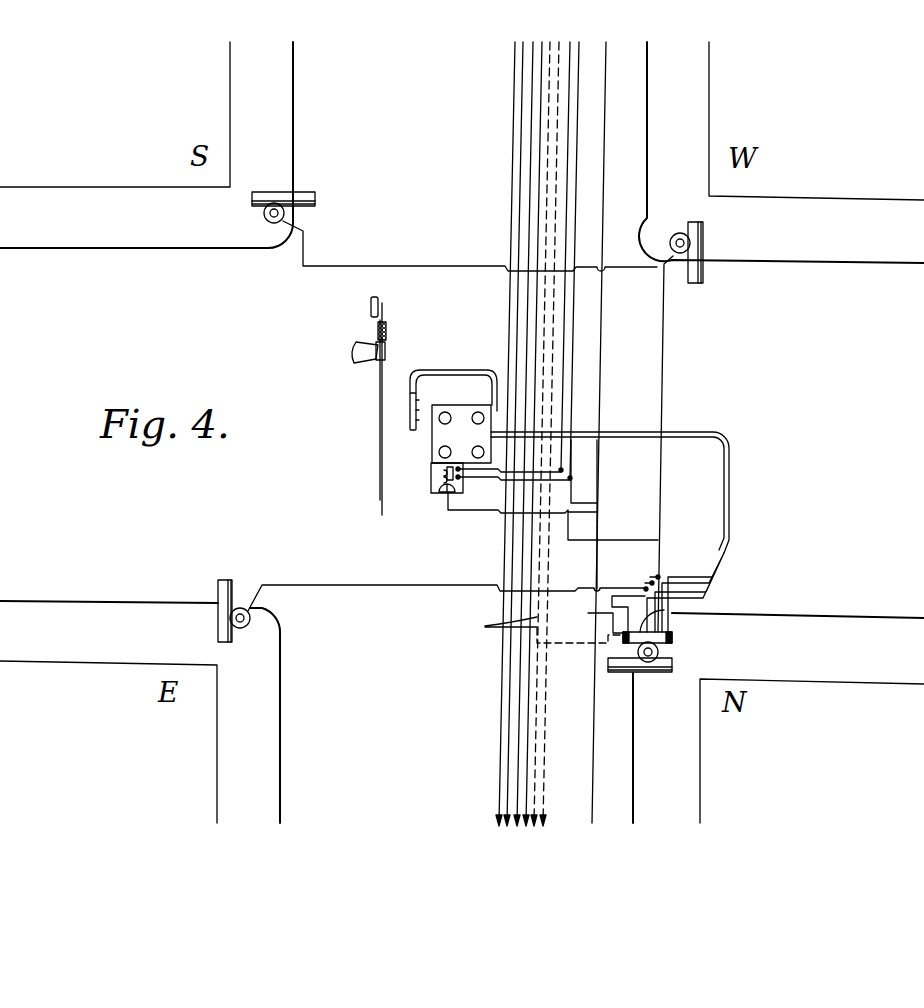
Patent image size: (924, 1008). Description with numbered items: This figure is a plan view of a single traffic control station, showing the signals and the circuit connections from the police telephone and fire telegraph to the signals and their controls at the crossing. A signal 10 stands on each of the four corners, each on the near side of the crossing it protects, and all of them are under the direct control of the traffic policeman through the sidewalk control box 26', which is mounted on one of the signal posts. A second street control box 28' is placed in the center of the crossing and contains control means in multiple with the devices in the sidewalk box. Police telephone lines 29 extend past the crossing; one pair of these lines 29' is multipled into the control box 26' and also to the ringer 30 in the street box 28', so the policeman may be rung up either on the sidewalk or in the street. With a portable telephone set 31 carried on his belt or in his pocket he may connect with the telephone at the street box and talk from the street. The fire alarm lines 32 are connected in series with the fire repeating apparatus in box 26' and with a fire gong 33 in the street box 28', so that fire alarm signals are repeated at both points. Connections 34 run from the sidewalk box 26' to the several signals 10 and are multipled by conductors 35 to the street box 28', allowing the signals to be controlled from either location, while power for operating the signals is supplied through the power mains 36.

The signal 10 is at (299, 200).
The control box 26' is at (654, 620).
The street control box 28' is at (569, 461).
The police telephone lines 29 is at (538, 434).
The pair of police telephone lines 29' is at (603, 493).
The ringer 30 is at (447, 476).
The portable telephone set 31 is at (372, 362).
The fire alarm lines 32 is at (597, 585).
The fire gong 33 is at (443, 495).
The connections 34 is at (403, 587).
The conductors 35 is at (728, 550).
The power mains 36 is at (529, 629).